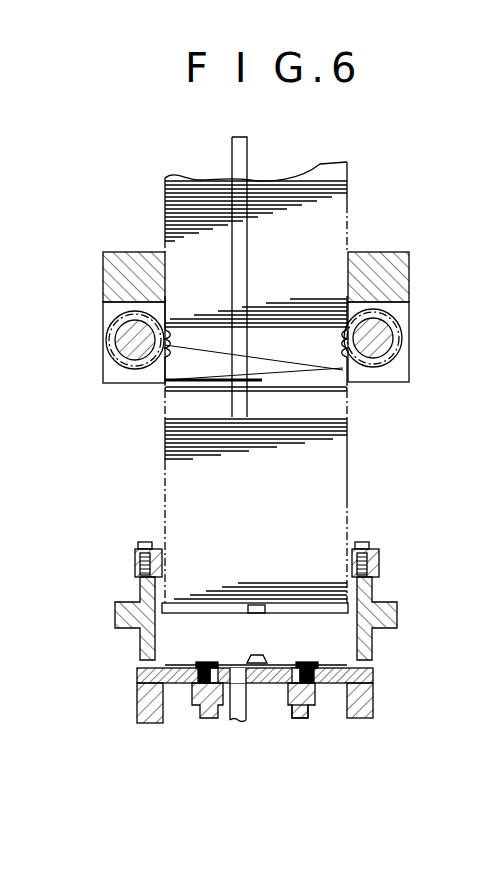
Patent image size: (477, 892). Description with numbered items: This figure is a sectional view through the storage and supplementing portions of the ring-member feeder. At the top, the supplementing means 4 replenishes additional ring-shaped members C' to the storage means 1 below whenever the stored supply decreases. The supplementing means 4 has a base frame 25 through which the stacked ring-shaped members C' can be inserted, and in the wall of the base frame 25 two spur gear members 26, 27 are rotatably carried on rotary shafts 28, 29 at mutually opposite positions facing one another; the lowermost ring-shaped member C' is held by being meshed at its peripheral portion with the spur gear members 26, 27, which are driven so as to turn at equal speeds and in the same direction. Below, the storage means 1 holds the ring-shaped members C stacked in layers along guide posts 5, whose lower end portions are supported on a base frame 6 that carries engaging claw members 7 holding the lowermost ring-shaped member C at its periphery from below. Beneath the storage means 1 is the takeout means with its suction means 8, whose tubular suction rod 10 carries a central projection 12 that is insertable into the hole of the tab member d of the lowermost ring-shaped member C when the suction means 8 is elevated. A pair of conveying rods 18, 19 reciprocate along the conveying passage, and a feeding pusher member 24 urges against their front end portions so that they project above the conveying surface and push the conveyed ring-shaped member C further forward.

The storage means 1 is at (352, 496).
The guide posts 5 is at (248, 160).
The ring-shaped members C' is at (366, 134).
The supplementing means 4 is at (109, 249).
The base frame 25 is at (410, 277).
The spur gear member 26 is at (112, 332).
The spur gear member 27 is at (402, 350).
The rotary shaft 28 is at (133, 356).
The rotary shaft 29 is at (373, 356).
The ring-shaped member C is at (266, 565).
The base frame 6 is at (378, 582).
The engaging claw members 7 is at (140, 646).
The tubular suction rod 10 is at (222, 710).
The conveying rod 18 is at (205, 714).
The suction means 8 is at (298, 712).
The conveying rod 19 is at (310, 712).
The feeding pusher member 24 is at (208, 664).
The projection 12 is at (262, 657).
The tab member d is at (218, 638).